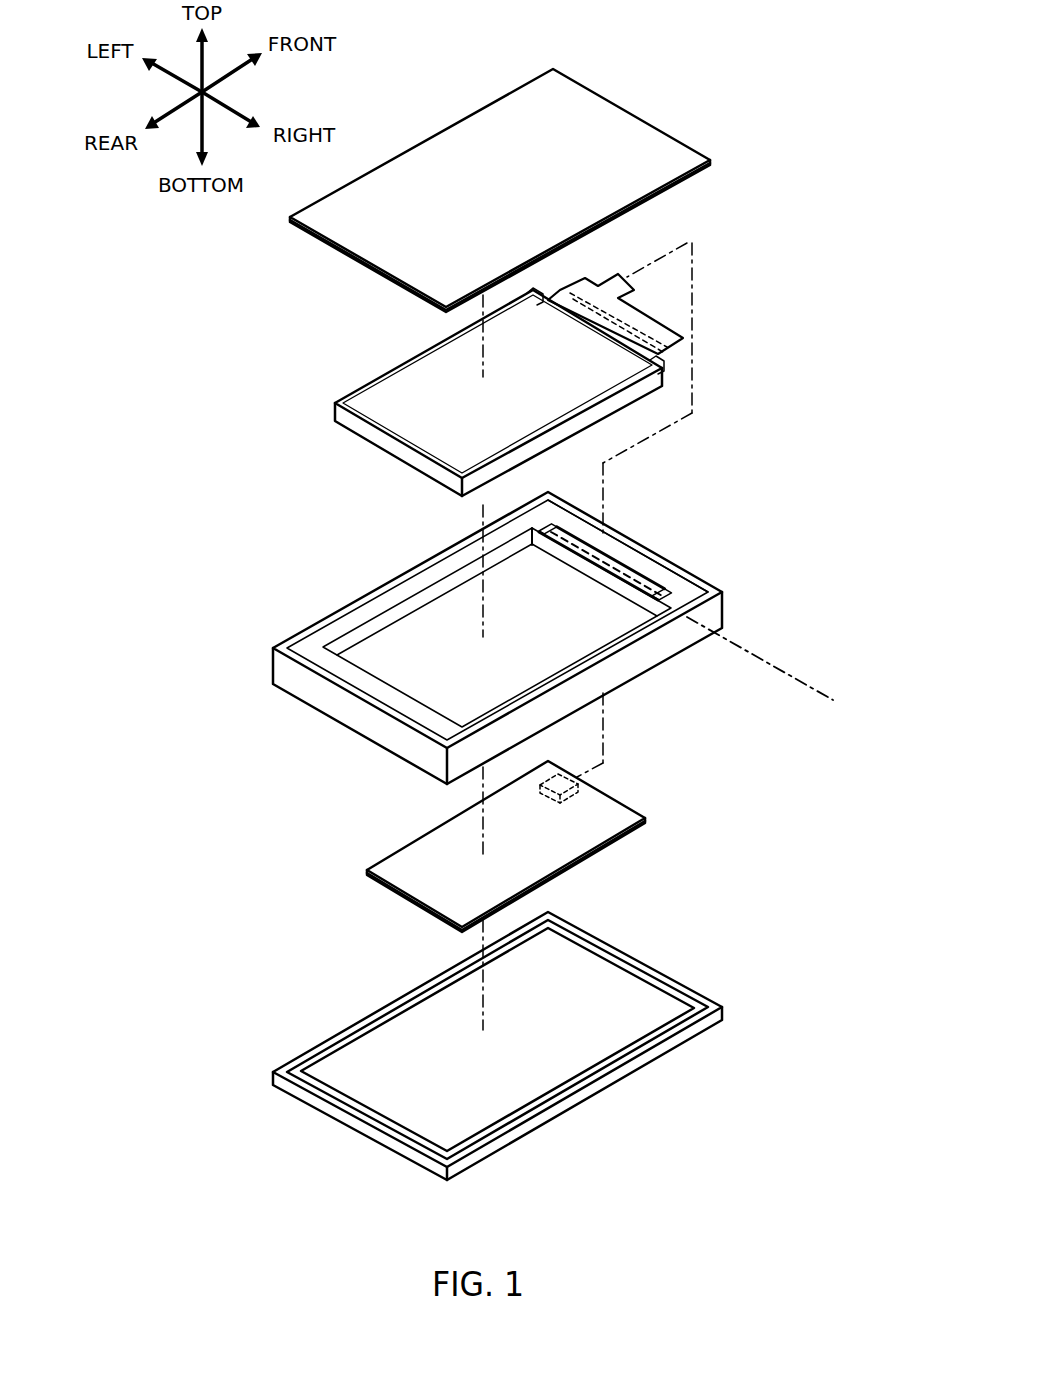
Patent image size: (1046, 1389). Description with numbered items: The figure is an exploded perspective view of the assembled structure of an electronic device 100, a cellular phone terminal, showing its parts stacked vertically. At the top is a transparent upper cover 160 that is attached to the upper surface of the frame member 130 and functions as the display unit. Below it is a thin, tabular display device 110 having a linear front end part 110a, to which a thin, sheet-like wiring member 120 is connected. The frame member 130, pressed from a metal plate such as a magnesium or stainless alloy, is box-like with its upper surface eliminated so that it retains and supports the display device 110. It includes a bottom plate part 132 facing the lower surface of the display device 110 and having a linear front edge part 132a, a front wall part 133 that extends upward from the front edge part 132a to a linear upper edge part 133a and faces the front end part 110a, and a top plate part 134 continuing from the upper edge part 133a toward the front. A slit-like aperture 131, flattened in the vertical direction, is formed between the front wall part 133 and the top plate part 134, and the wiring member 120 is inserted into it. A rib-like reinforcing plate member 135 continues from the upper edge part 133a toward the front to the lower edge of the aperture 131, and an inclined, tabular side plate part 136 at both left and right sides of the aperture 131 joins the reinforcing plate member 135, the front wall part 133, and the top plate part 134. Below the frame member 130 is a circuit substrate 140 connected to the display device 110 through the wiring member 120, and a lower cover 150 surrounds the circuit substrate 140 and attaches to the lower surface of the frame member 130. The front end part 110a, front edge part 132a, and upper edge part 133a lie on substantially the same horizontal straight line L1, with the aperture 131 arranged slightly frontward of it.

The electronic device 100 is at (708, 86).
The display device 110 is at (341, 413).
The front end part 110a is at (660, 367).
The wiring member 120 is at (642, 323).
The frame member 130 is at (282, 670).
The aperture 131 is at (657, 578).
The bottom plate part 132 is at (392, 642).
The front edge part 132a is at (612, 577).
The front wall part 133 is at (617, 583).
The upper edge part 133a is at (540, 530).
The top plate part 134 is at (678, 572).
The reinforcing plate member 135 is at (612, 570).
The side plate part 136 is at (538, 536).
The circuit substrate 140 is at (408, 868).
The lower cover 150 is at (274, 1073).
The upper cover 160 is at (515, 110).
The straight line L1 is at (770, 662).